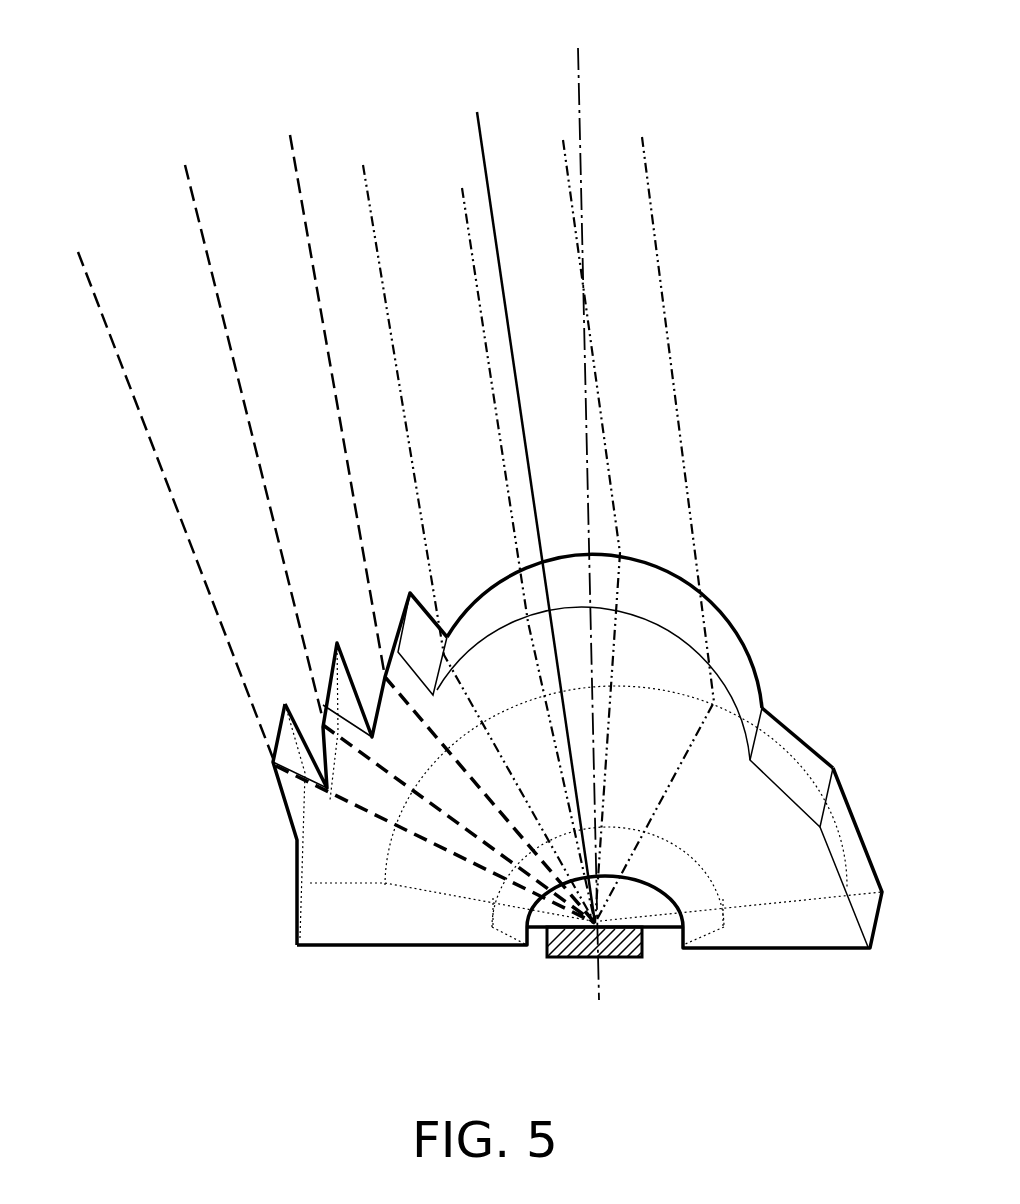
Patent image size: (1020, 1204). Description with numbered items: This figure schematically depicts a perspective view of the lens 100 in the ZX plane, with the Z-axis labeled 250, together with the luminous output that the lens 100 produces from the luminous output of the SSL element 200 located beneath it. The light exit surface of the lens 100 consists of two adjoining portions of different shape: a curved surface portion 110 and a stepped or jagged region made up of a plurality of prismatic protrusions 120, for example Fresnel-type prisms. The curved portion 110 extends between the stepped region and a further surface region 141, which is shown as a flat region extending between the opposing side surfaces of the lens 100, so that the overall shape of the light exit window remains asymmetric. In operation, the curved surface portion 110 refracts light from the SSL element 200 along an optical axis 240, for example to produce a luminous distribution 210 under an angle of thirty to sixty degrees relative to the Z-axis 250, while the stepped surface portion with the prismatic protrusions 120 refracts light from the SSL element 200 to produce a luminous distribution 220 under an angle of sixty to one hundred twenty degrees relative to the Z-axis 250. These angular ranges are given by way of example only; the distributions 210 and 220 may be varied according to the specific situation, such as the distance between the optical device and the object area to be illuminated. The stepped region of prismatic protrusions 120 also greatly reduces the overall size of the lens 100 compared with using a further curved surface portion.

The lens 100 is at (583, 687).
The curved surface portion 110 is at (568, 578).
The prismatic protrusions 120 is at (355, 680).
The further surface region 141 is at (788, 767).
The SSL element 200 is at (620, 957).
The luminous distribution 210 is at (659, 267).
The luminous distribution 220 is at (148, 437).
The optical axis 240 is at (477, 140).
The Z-axis 250 is at (580, 92).